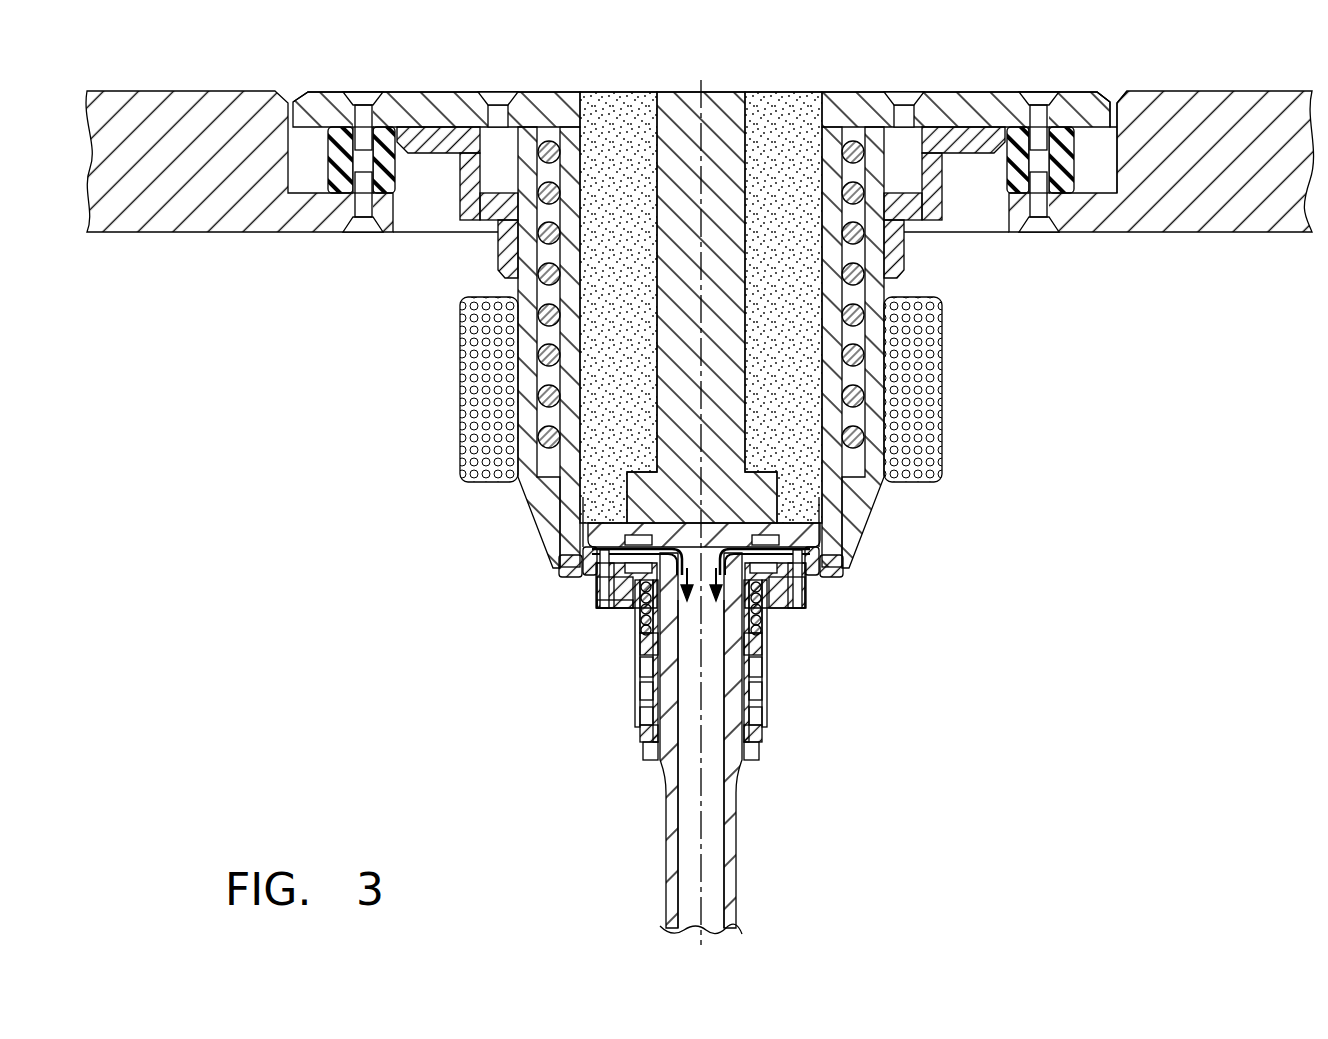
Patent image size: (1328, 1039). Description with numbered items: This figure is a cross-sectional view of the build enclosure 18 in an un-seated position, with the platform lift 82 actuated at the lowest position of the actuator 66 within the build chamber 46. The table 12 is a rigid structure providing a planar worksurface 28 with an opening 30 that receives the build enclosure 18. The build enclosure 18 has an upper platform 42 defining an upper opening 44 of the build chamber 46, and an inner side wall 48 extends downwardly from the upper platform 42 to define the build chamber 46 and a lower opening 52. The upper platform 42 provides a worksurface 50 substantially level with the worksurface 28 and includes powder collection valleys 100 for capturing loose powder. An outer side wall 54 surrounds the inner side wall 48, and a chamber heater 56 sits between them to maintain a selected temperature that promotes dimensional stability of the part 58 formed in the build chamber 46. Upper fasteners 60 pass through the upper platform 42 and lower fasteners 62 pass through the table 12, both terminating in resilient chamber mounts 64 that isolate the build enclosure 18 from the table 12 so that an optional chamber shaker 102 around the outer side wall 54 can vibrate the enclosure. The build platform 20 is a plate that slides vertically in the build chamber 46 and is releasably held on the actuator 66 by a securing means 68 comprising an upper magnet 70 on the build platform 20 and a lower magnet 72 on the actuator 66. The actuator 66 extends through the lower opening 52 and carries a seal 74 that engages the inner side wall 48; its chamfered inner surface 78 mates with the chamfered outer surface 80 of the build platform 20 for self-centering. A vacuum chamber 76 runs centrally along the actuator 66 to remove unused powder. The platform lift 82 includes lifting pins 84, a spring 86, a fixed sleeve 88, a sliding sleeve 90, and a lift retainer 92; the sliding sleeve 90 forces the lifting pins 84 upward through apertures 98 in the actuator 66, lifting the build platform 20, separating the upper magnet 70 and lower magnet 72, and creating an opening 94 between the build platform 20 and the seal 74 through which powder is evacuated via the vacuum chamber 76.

The table 12 is at (1225, 192).
The build enclosure 18 is at (1078, 65).
The build platform 20 is at (805, 522).
The worksurface 28 is at (1230, 88).
The opening 30 is at (1100, 100).
The upper platform 42 is at (418, 112).
The upper opening 44 is at (600, 110).
The build chamber 46 is at (795, 90).
The inner side wall 48 is at (578, 478).
The worksurface 50 is at (432, 85).
The lower opening 52 is at (838, 577).
The outer side wall 54 is at (535, 483).
The chamber heater 56 is at (540, 276).
The part 58 is at (722, 110).
The upper fasteners 60 is at (362, 100).
The lower fasteners 62 is at (360, 235).
The chamber mounts 64 is at (332, 160).
The actuator 66 is at (740, 880).
The securing means 68 is at (600, 612).
The upper magnet 70 is at (795, 530).
The lower magnet 72 is at (760, 630).
The seal 74 is at (603, 585).
The vacuum chamber 76 is at (705, 848).
The chamfered inner surface 78 is at (600, 577).
The chamfered outer surface 80 is at (568, 542).
The platform lift 82 is at (600, 700).
The lifting pins 84 is at (605, 622).
The spring 86 is at (648, 637).
The fixed sleeve 88 is at (760, 732).
The sliding sleeve 90 is at (640, 662).
The lift retainer 92 is at (752, 755).
The opening 94 is at (840, 550).
The apertures 98 is at (813, 592).
The powder collection valleys 100 is at (500, 94).
The chamber shaker 102 is at (920, 345).